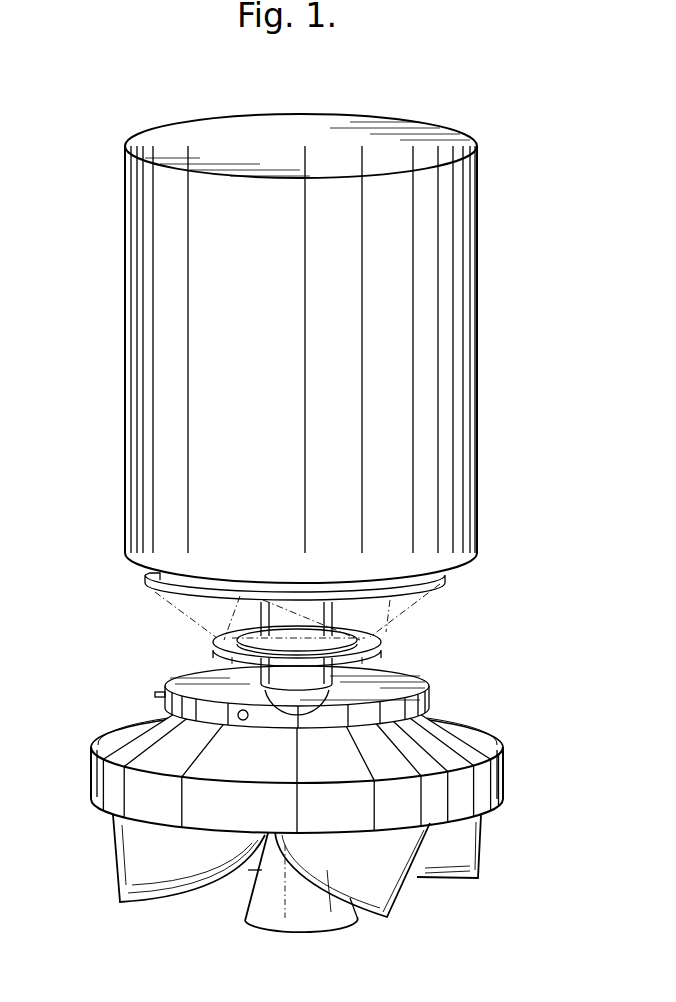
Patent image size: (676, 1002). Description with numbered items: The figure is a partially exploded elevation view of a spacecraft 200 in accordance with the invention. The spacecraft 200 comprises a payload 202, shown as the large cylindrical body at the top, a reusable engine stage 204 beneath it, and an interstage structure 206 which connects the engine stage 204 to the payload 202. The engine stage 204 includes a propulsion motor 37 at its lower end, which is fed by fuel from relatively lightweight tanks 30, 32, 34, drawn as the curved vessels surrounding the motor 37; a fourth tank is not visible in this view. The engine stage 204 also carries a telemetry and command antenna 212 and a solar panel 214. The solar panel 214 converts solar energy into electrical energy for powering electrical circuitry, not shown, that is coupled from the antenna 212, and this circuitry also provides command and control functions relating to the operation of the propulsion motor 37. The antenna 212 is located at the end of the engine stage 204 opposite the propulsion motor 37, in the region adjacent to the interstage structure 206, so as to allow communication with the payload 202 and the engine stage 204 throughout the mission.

The spacecraft 200 is at (508, 262).
The payload 202 is at (476, 373).
The reusable engine stage 204 is at (500, 793).
The interstage structure 206 is at (440, 599).
The telemetry and command antenna 212 is at (372, 638).
The solar panel 214 is at (92, 762).
The tank 30 is at (163, 903).
The tank 32 is at (392, 908).
The tank 34 is at (463, 878).
The propulsion motor 37 is at (316, 932).